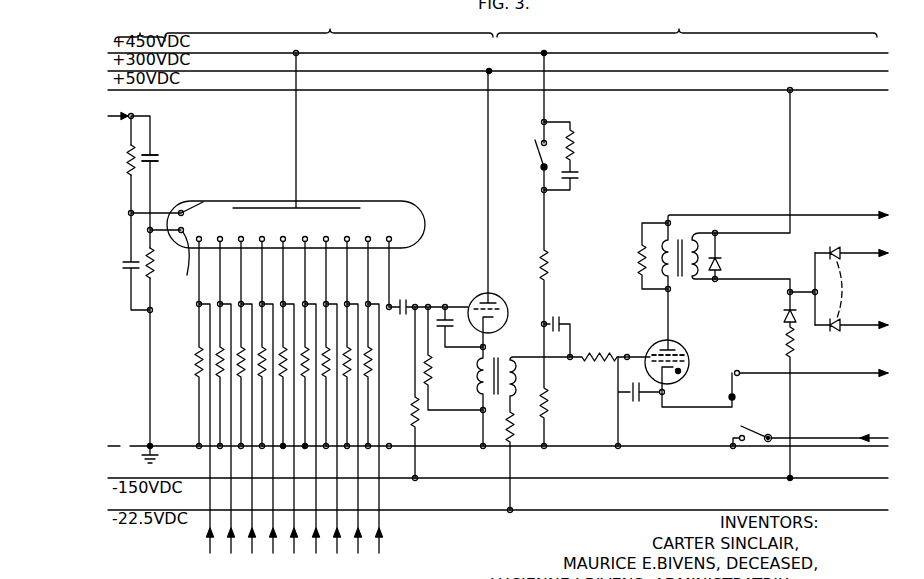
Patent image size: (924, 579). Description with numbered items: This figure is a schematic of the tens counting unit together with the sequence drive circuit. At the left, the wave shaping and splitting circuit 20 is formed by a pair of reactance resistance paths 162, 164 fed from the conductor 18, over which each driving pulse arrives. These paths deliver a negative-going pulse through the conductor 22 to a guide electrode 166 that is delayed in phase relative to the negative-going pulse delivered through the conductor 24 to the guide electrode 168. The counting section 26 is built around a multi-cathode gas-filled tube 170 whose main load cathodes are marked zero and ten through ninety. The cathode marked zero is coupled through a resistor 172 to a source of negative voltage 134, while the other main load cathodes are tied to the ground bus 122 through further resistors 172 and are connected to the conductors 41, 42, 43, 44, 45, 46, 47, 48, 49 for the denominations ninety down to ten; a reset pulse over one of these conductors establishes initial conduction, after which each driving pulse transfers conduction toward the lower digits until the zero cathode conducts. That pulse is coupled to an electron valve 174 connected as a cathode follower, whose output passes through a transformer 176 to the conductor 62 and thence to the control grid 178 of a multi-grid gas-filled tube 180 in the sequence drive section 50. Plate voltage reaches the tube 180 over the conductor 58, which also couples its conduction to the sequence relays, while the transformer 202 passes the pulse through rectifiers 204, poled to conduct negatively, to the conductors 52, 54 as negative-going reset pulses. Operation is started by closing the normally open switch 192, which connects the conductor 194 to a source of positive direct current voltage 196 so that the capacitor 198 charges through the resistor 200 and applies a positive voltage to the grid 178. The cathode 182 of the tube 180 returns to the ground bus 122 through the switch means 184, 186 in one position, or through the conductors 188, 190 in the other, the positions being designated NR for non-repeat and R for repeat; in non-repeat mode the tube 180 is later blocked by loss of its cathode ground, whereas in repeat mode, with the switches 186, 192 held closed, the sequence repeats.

The conductor 18 is at (120, 106).
The wave shaping and splitting circuit 20 is at (140, 24).
The conductor 22 is at (160, 212).
The conductor 24 is at (162, 233).
The decade tube section 26 is at (329, 22).
The conductor 41 is at (209, 551).
The conductor 42 is at (230, 551).
The conductor 43 is at (251, 551).
The conductor 44 is at (272, 551).
The conductor 45 is at (295, 551).
The conductor 46 is at (317, 550).
The conductor 47 is at (338, 551).
The conductor 48 is at (359, 551).
The conductor 49 is at (380, 550).
The output relay section 50 is at (687, 22).
The conductor 52 is at (860, 253).
The conductor 54 is at (860, 327).
The conductor 58 is at (860, 215).
The conductor 62 is at (560, 359).
The ground bus 122 is at (450, 447).
The source of negative voltage 134 is at (458, 479).
The reactance resistance path 162 is at (128, 160).
The reactance resistance path 164 is at (153, 133).
The guide electrode 166 is at (203, 196).
The guide electrode 168 is at (181, 264).
The multi-cathode gas-filled tube 170 is at (337, 202).
The resistor 172 is at (196, 354).
The electron valve 174 is at (469, 298).
The transformer 176 is at (498, 353).
The control grid 178 is at (681, 360).
The multi-grid gas-filled tube 180 is at (654, 343).
The cathode 182 is at (672, 371).
The switch means 184 is at (738, 386).
The switch means 186 is at (740, 428).
The conductor 188 is at (850, 372).
The conductor 190 is at (850, 436).
The normally open switch 192 is at (539, 163).
The conductor 194 is at (547, 107).
The source of positive direct current voltage 196 is at (560, 52).
The capacitor 198 is at (561, 317).
The resistor 200 is at (548, 260).
The transformer 202 is at (680, 236).
The rectifiers 204 is at (843, 290).